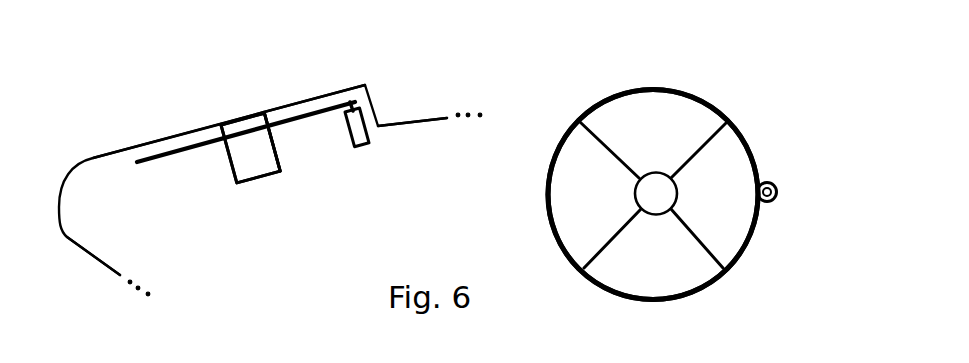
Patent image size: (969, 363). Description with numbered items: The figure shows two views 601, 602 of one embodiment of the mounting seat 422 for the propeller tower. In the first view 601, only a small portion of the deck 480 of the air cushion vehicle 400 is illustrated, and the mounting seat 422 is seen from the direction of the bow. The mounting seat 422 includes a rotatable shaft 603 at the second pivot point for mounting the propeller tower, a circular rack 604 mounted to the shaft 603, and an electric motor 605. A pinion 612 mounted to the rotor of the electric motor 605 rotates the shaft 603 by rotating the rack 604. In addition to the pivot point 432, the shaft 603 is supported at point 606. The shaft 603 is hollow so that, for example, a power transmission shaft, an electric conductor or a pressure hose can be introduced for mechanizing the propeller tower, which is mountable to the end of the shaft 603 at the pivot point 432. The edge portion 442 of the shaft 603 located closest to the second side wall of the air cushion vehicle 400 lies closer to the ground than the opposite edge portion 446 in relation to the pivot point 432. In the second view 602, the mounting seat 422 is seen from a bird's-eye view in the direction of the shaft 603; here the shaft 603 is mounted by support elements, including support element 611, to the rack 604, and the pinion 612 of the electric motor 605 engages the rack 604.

The first view 601 is at (70, 90).
The second view 602 is at (575, 88).
The rotatable shaft 603 is at (235, 185).
The circular rack 604 is at (153, 163).
The electric motor 605 is at (367, 146).
The support point 606 is at (282, 170).
The support element 611 is at (608, 153).
The pinion 612 is at (770, 203).
The air cushion vehicle 400 is at (83, 253).
The mounting seat 422 is at (235, 185).
The pivot point 432 is at (225, 123).
The edge portion 442 is at (212, 121).
The opposite edge portion 446 is at (268, 105).
The deck 480 is at (425, 118).